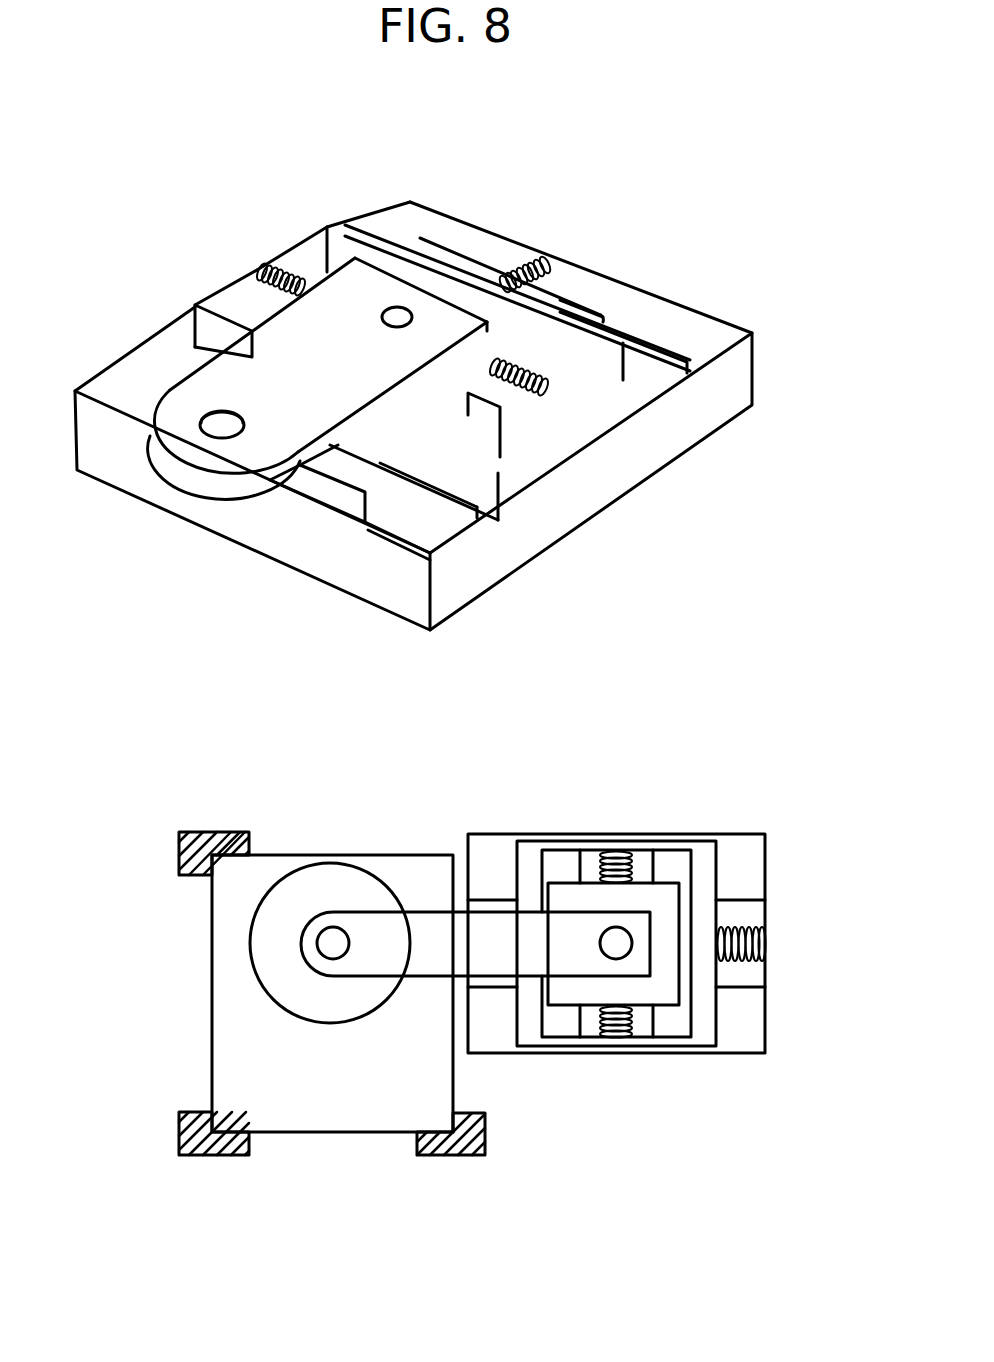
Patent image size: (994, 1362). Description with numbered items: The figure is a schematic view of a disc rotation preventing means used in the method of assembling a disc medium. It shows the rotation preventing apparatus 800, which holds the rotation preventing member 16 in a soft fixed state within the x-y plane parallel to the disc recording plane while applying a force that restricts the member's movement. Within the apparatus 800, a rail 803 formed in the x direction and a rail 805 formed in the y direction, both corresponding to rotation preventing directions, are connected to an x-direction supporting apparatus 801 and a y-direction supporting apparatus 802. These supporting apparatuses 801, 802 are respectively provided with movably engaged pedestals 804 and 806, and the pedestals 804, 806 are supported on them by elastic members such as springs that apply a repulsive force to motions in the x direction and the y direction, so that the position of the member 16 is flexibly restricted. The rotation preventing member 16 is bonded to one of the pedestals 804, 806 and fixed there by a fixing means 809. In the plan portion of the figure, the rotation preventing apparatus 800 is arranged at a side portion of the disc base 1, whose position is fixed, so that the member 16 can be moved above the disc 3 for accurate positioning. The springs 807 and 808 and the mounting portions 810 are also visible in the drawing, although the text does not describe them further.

The disc base 1 is at (210, 932).
The disc 3 is at (277, 985).
The rotation preventing member 16 is at (173, 442).
The rotation preventing apparatus 800 is at (538, 530).
The x-direction supporting apparatus 801 is at (632, 458).
The y-direction supporting apparatus 802 is at (610, 377).
The rail 803 is at (327, 490).
The pedestal 804 is at (452, 477).
The rail 805 is at (267, 293).
The pedestal 806 is at (395, 260).
The second spring 807 is at (537, 262).
The third spring 808 is at (520, 400).
The fixing means 809 is at (197, 323).
The mounting foot 810 is at (483, 1122).